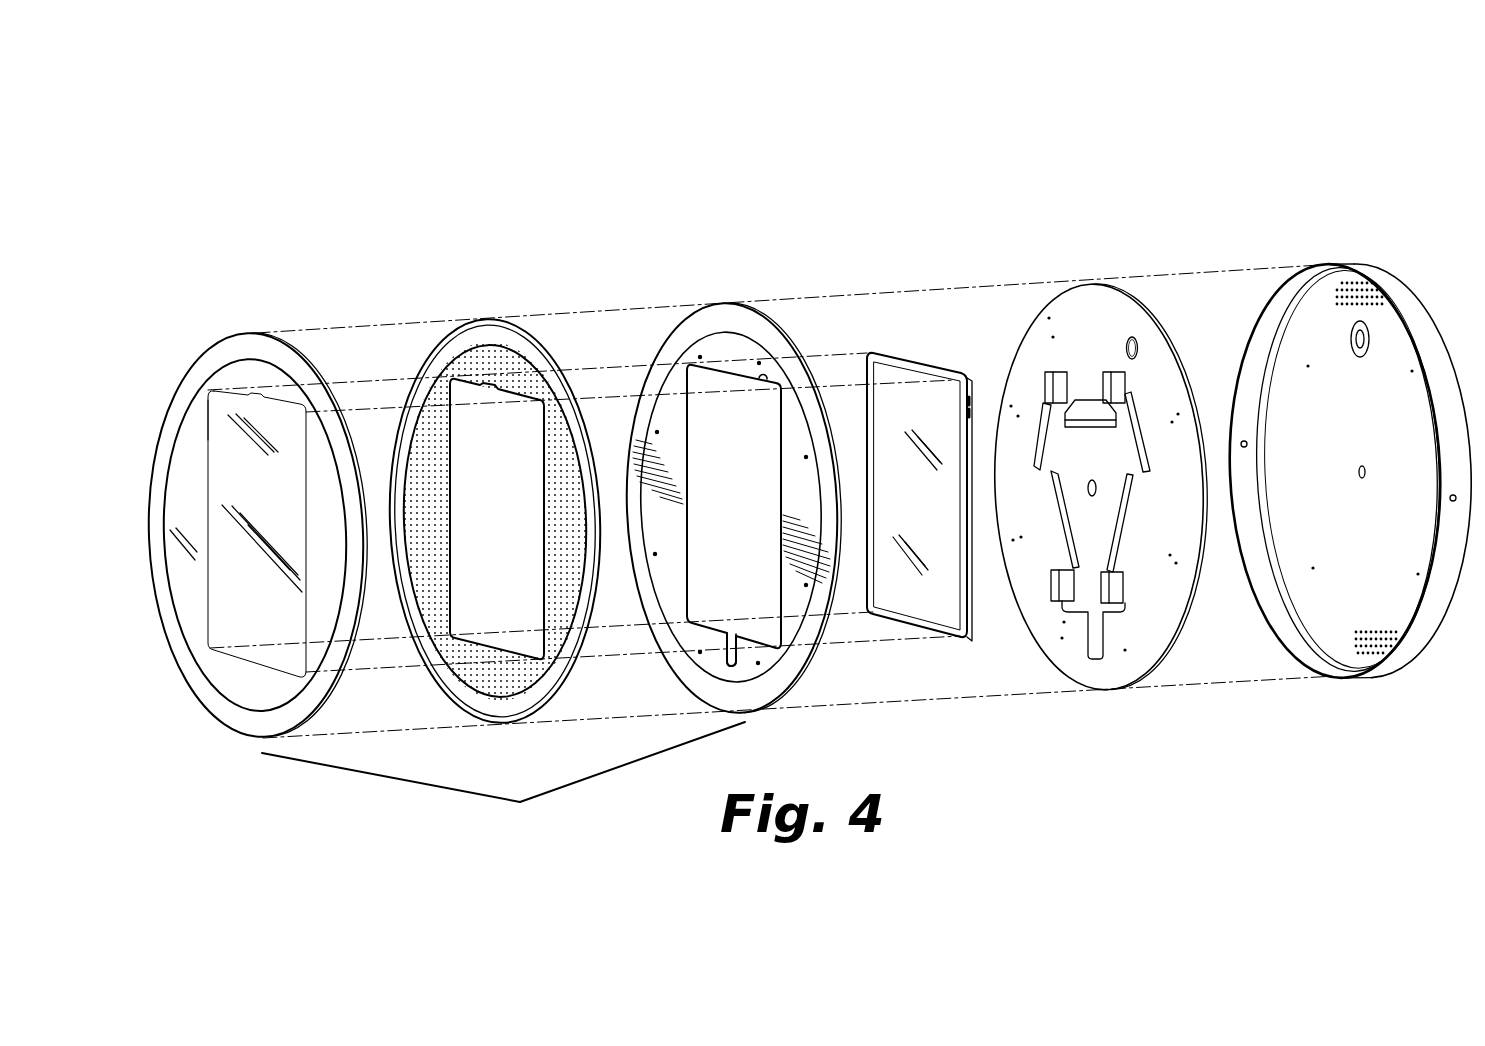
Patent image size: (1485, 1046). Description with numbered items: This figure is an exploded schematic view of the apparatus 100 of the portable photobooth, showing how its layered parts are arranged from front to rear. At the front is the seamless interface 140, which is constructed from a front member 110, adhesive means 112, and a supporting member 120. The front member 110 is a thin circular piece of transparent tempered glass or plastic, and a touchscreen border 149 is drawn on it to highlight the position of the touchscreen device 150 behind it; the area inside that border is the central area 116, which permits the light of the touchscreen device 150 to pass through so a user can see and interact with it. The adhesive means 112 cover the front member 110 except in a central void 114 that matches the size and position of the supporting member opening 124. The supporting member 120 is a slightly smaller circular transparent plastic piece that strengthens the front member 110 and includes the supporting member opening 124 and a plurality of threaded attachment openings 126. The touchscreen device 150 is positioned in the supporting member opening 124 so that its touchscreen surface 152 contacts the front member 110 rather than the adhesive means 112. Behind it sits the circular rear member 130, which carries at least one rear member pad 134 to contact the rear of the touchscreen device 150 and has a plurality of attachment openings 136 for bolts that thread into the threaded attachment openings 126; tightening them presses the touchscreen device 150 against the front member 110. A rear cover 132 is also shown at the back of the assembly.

The apparatus 100 is at (585, 158).
The front member 110 is at (212, 330).
The adhesive means 112 is at (463, 305).
The central void 114 is at (472, 395).
The central area 116 is at (240, 630).
The supporting member 120 is at (697, 290).
The supporting member opening 124 is at (722, 385).
The threaded attachment openings 126 is at (762, 368).
The rear member 130 is at (1093, 268).
The rear cover 132 is at (1370, 258).
The rear member pad 134 is at (1115, 593).
The attachment openings 136 is at (1118, 335).
The seamless interface 140 is at (503, 782).
The touchscreen border 149 is at (208, 420).
The touchscreen device 150 is at (900, 345).
The touchscreen surface 152 is at (940, 595).